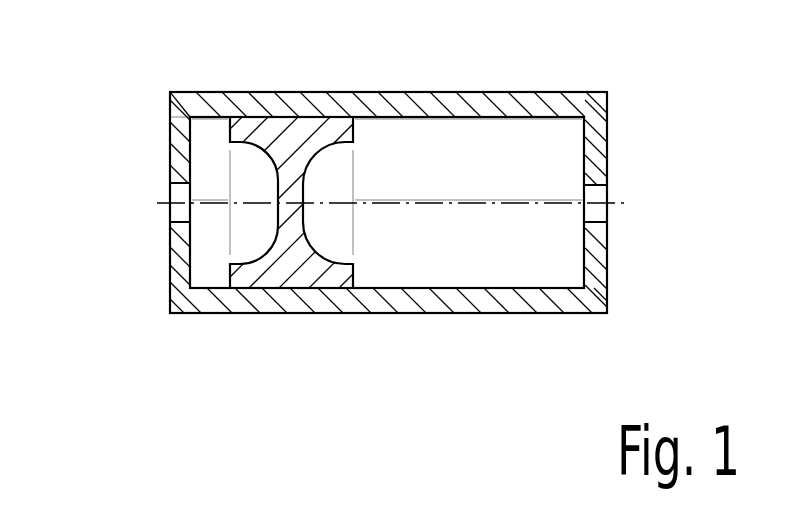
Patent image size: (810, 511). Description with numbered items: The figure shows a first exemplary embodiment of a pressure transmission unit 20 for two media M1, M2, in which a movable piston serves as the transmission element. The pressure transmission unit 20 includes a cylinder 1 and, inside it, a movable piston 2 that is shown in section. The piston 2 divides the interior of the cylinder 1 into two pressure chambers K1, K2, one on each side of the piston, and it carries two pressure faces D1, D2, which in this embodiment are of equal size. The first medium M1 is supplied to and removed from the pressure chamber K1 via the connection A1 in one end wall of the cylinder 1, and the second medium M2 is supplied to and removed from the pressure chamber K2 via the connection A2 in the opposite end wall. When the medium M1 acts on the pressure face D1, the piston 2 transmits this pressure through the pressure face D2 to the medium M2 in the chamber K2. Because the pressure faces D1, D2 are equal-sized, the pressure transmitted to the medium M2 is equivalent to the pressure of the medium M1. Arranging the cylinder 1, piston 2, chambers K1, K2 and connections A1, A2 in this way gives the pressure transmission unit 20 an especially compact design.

The cylinder 1 is at (345, 307).
The movable piston 2 is at (250, 275).
The pressure transmission unit 20 is at (145, 120).
The medium M1 is at (207, 128).
The medium M2 is at (462, 148).
The pressure chamber K1 is at (200, 160).
The pressure chamber K2 is at (548, 158).
The connection A1 is at (164, 207).
The connection A2 is at (613, 211).
The pressure face D1 is at (205, 245).
The pressure face D2 is at (375, 234).